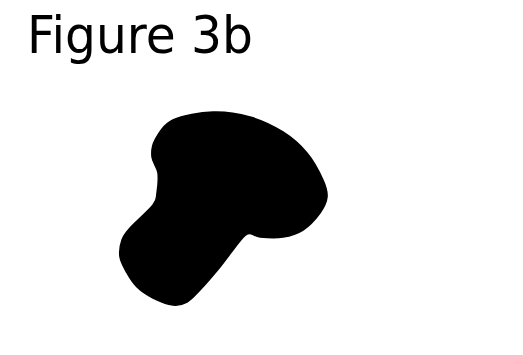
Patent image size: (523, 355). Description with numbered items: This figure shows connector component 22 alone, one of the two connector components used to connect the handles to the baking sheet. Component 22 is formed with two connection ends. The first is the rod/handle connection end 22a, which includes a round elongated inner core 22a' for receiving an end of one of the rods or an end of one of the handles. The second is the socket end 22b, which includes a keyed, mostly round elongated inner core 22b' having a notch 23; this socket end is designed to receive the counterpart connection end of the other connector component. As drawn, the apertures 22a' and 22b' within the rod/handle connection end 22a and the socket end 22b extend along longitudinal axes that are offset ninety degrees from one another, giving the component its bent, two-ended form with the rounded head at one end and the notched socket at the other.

The connector component 22 is at (338, 337).
The rod/handle connection end 22a is at (266, 163).
The round elongated inner core 22a' is at (361, 190).
The socket end 22b is at (143, 238).
The keyed, mostly round elongated inner core 22b' is at (108, 290).
The notch 23 is at (120, 257).